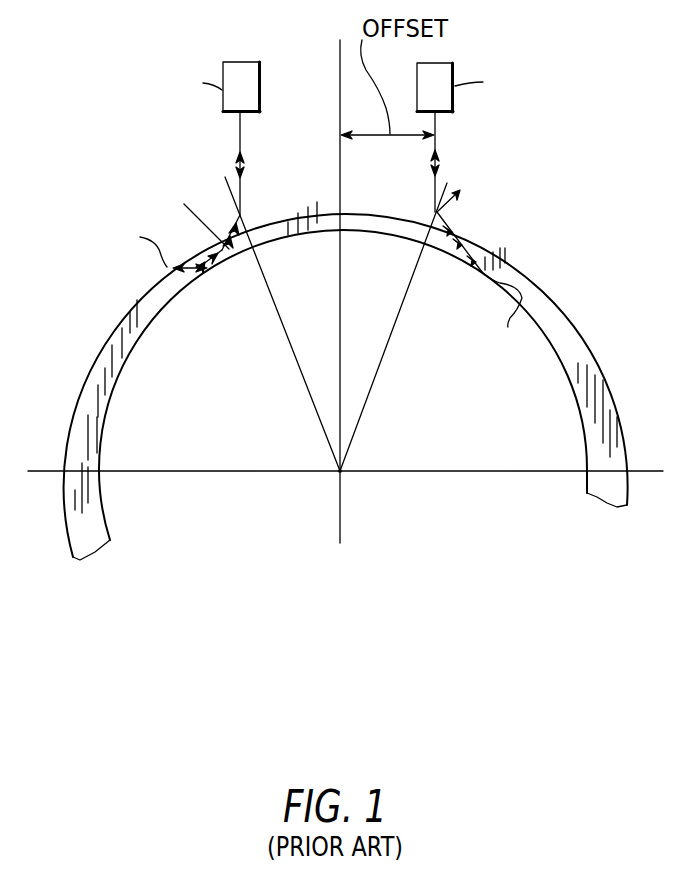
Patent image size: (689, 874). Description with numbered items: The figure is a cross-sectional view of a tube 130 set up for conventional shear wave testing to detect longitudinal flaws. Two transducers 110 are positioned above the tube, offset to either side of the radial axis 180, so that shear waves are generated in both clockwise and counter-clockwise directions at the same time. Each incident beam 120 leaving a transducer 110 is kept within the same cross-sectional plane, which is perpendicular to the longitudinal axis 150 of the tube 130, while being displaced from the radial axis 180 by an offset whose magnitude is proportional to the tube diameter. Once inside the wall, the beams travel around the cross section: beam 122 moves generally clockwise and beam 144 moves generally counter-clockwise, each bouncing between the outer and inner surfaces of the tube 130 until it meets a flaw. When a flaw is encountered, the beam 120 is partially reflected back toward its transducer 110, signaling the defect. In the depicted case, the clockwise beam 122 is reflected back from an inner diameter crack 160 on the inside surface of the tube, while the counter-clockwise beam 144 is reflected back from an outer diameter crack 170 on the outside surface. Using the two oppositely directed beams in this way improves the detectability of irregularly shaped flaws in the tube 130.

The transducer 110 is at (261, 62).
The incident beam 120 is at (237, 133).
The clockwise beam 122 is at (469, 223).
The tube 130 is at (577, 342).
The counter-clockwise beam 144 is at (191, 229).
The longitudinal axis 150 is at (342, 473).
The inner diameter crack 160 is at (486, 273).
The outer diameter crack 170 is at (172, 268).
The radial axis 180 is at (340, 85).